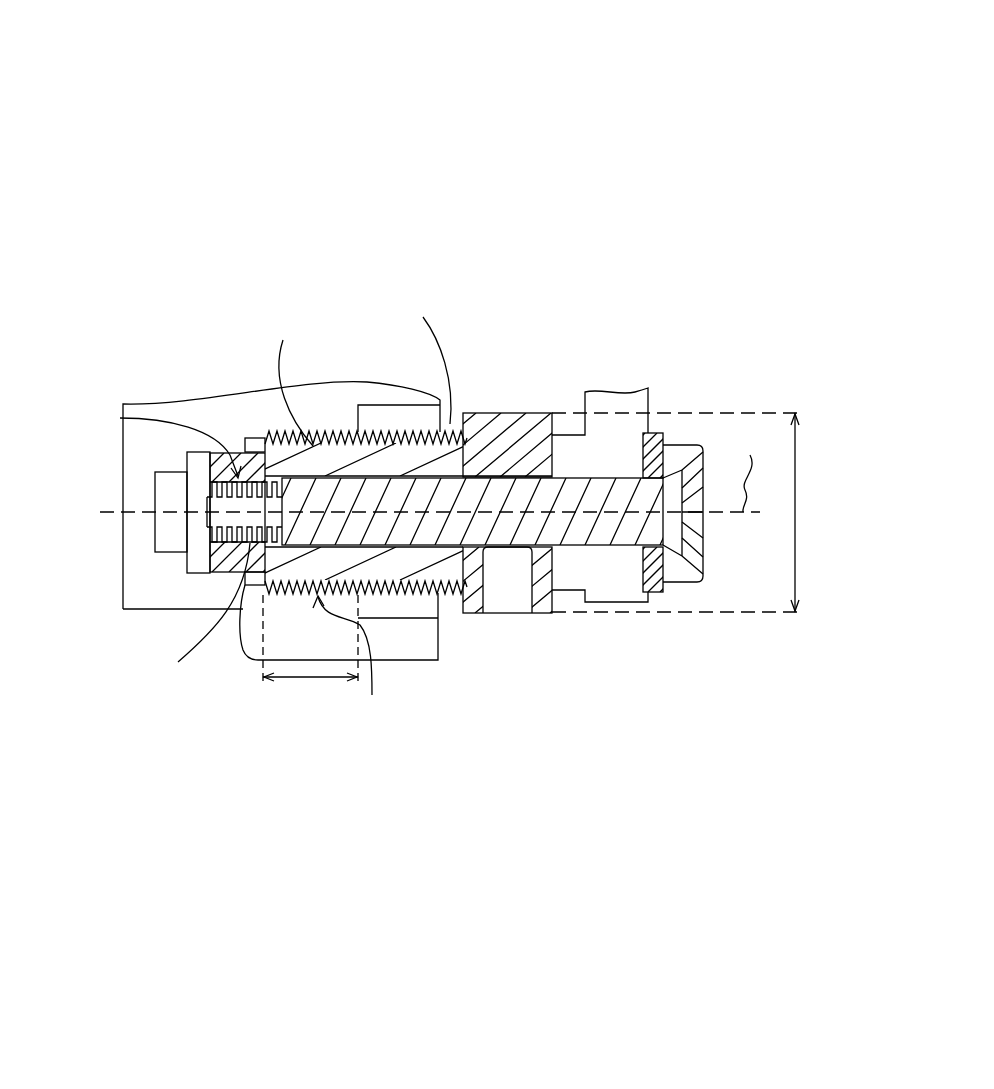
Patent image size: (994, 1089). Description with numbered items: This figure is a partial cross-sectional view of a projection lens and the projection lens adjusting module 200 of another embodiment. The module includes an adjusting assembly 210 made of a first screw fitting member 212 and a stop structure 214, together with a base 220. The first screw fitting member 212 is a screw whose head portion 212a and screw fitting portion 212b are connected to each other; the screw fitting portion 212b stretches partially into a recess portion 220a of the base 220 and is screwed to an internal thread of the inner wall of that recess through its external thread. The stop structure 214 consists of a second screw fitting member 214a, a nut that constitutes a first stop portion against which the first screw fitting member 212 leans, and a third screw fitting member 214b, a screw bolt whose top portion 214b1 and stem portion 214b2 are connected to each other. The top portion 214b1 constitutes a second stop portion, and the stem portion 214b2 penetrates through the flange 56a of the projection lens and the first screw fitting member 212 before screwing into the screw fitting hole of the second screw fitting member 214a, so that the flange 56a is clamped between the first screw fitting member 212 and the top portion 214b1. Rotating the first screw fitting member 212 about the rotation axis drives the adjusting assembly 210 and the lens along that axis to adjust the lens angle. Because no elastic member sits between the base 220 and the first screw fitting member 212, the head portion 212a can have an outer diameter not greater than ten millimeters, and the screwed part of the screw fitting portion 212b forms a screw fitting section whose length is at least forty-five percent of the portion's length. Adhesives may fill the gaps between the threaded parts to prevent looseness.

The projection lens adjusting module 200 is at (203, 698).
The adjusting assembly 210 is at (722, 18).
The first screw fitting member 212 is at (417, 782).
The head portion 212a is at (543, 585).
The screw fitting portion 212b is at (392, 580).
The stop structure 214 is at (783, 102).
The second screw fitting member 214a is at (150, 628).
The third screw fitting member 214b is at (465, 263).
The top portion 214b1 is at (678, 460).
The stem portion 214b2 is at (398, 497).
The base 220 is at (325, 410).
The recess portion 220a is at (258, 436).
The flange 56a is at (615, 578).